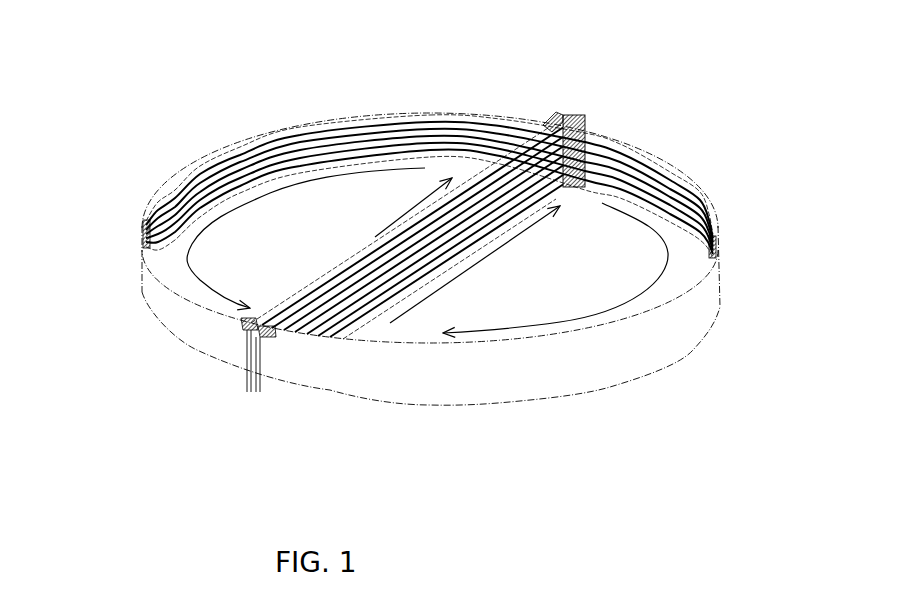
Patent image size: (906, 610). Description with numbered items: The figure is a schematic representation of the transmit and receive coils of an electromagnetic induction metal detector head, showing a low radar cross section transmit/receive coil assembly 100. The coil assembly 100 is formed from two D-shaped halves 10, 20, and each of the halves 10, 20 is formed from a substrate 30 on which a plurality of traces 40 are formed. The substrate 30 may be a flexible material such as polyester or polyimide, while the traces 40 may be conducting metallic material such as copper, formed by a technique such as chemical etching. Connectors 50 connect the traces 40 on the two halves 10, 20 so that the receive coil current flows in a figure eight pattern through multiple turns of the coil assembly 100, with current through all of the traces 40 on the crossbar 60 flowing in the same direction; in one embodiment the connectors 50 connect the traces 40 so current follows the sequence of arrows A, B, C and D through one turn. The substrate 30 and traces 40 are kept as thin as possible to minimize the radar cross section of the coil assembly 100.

The transmit/receive coil assembly 100 is at (728, 121).
The D-shaped half 10 is at (408, 118).
The D-shaped half 20 is at (703, 192).
The substrate 30 is at (330, 383).
The traces 40 is at (195, 171).
The connectors 50 is at (578, 118).
The crossbar 60 is at (428, 210).